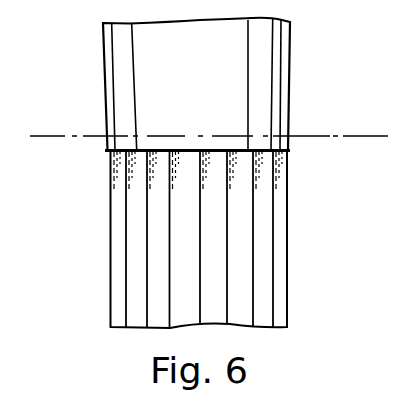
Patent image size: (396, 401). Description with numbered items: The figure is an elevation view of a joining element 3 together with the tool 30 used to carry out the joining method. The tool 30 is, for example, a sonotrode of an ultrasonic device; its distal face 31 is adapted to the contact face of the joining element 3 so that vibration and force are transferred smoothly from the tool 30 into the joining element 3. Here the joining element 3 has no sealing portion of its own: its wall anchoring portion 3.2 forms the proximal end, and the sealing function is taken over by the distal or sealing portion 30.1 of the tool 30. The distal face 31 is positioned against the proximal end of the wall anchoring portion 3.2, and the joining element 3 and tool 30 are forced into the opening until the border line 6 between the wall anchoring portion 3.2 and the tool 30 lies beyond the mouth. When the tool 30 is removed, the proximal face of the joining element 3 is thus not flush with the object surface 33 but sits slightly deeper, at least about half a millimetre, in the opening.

The tool 30 is at (290, 42).
The distal (or sealing) portion of the tool 30.1 is at (276, 90).
The distal face 31 is at (207, 152).
The border line 6 is at (183, 150).
The joining element 3 is at (100, 148).
The wall anchoring portion 3.2 is at (278, 246).
The object surface 33 is at (52, 133).